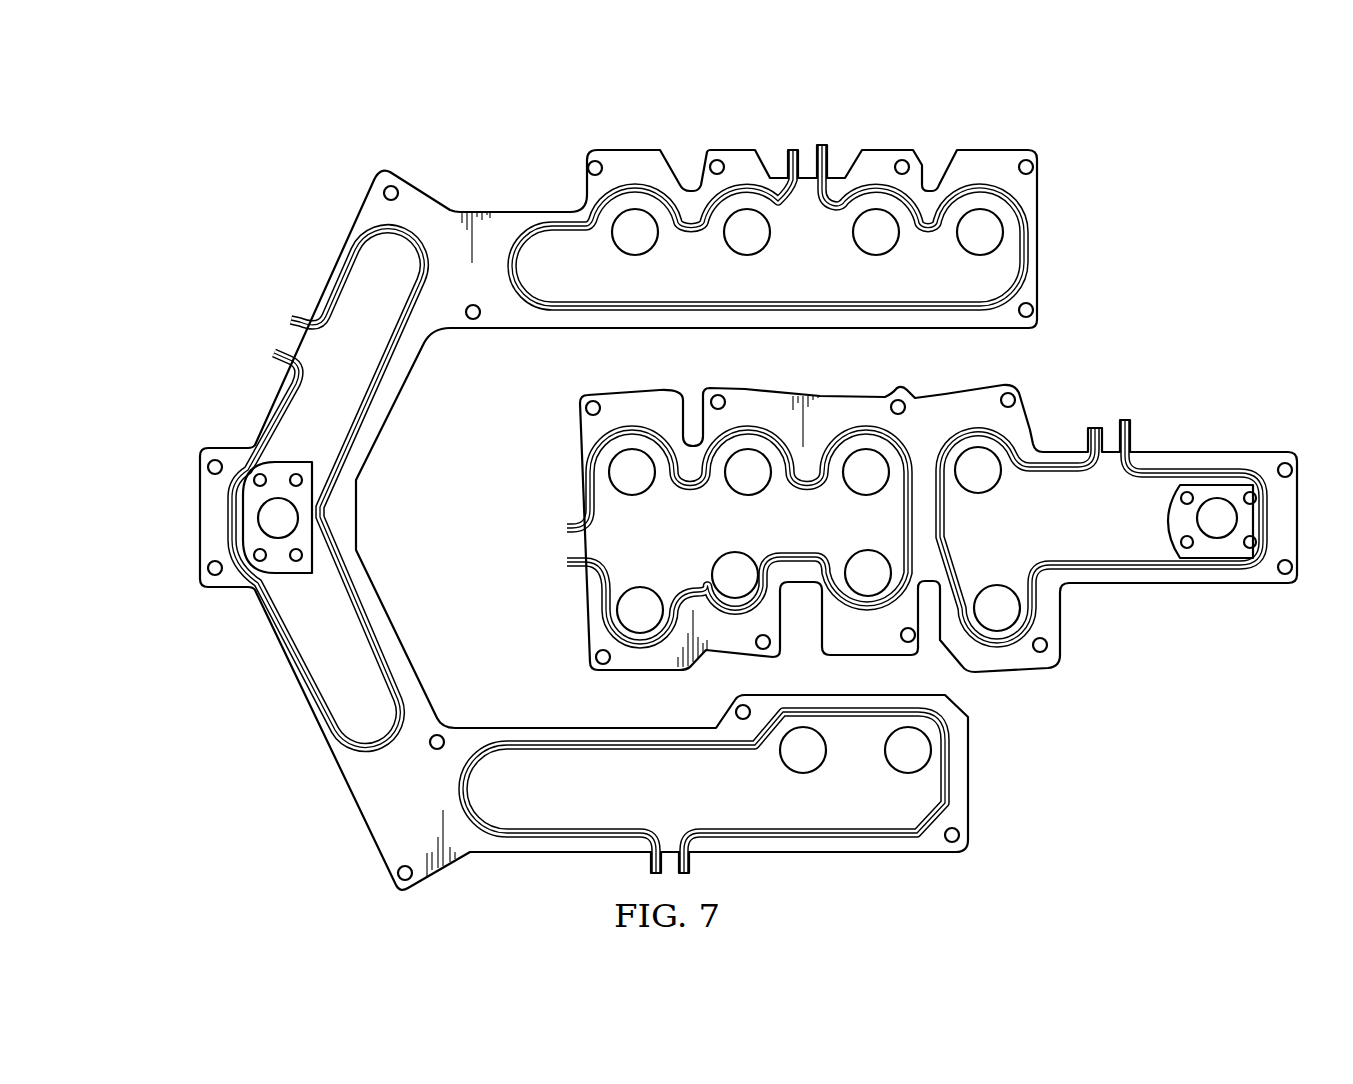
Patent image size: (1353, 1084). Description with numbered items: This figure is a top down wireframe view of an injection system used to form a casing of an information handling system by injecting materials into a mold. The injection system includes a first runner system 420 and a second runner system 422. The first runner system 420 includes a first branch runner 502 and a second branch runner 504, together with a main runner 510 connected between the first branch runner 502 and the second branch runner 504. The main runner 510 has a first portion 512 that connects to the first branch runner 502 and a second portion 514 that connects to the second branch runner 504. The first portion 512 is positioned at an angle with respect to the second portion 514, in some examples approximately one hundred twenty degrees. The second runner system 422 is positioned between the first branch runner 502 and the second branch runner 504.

The first runner system 420 is at (482, 165).
The second runner system 422 is at (1257, 430).
The first branch runner 502 is at (948, 126).
The second branch runner 504 is at (889, 873).
The main runner 510 is at (176, 493).
The first portion 512 is at (262, 298).
The second portion 514 is at (262, 708).